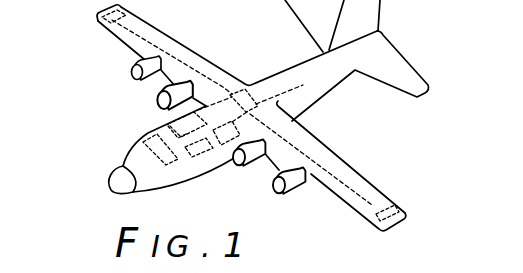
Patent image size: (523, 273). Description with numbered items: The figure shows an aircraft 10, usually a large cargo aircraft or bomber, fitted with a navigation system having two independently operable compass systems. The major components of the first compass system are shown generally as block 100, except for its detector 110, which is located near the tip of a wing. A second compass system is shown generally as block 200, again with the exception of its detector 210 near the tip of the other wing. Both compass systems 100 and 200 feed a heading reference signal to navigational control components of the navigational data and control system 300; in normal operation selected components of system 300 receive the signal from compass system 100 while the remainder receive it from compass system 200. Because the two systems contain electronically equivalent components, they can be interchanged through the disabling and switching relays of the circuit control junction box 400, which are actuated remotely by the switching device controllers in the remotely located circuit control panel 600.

The aircraft 10 is at (267, 74).
The first compass system 100 is at (168, 117).
The detector 110 is at (106, 30).
The second compass system 200 is at (193, 159).
The detector 210 is at (393, 207).
The navigational data and control system 300 is at (142, 149).
The circuit control junction box 400 is at (256, 105).
The circuit control panel 600 is at (289, 85).